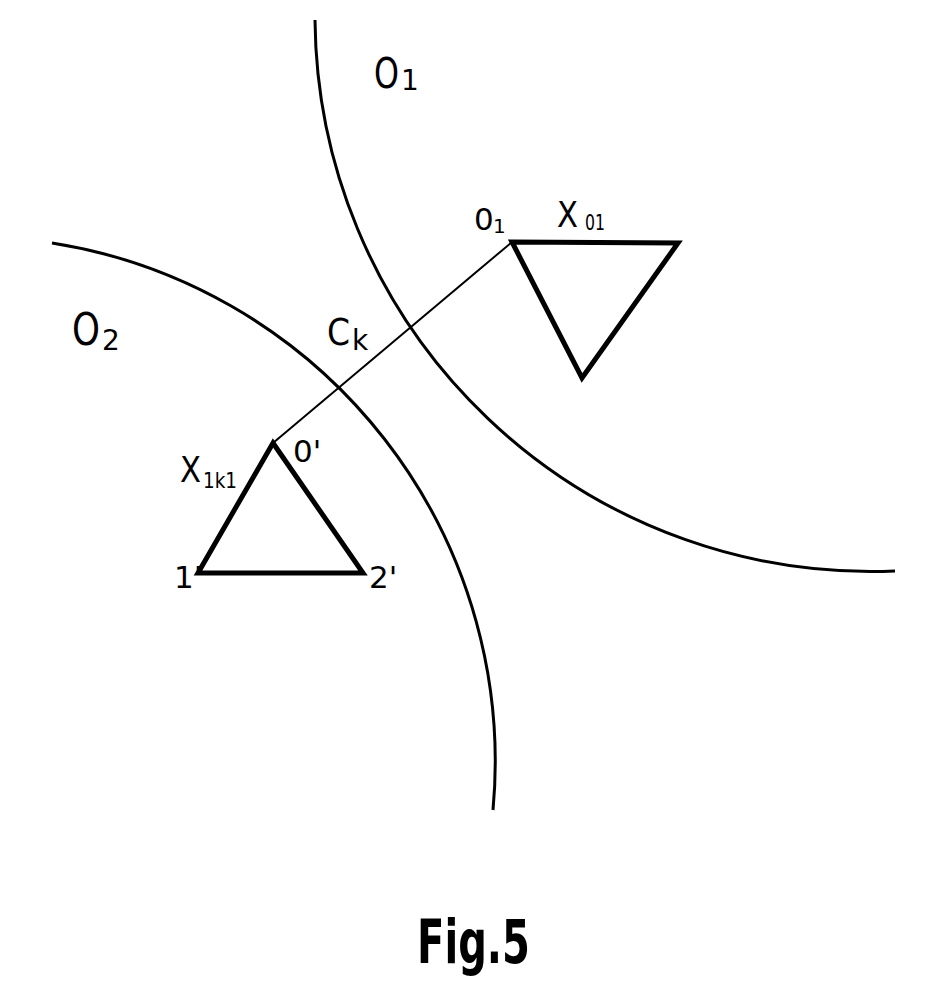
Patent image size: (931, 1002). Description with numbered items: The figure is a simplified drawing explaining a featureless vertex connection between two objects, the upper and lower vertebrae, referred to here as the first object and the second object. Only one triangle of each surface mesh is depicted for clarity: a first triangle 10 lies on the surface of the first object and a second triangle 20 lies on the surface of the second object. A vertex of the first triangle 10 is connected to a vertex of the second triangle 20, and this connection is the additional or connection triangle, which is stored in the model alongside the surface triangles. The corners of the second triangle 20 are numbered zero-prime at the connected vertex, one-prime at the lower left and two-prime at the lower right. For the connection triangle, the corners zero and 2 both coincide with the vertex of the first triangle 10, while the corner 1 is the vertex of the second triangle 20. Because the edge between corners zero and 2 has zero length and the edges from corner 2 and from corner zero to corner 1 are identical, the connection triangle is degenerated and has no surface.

The first triangle 10 is at (622, 327).
The second triangle 20 is at (276, 574).
The corner 1 of connection triangle 1 is at (277, 424).
The corner 2 of connection triangle 2 is at (512, 222).